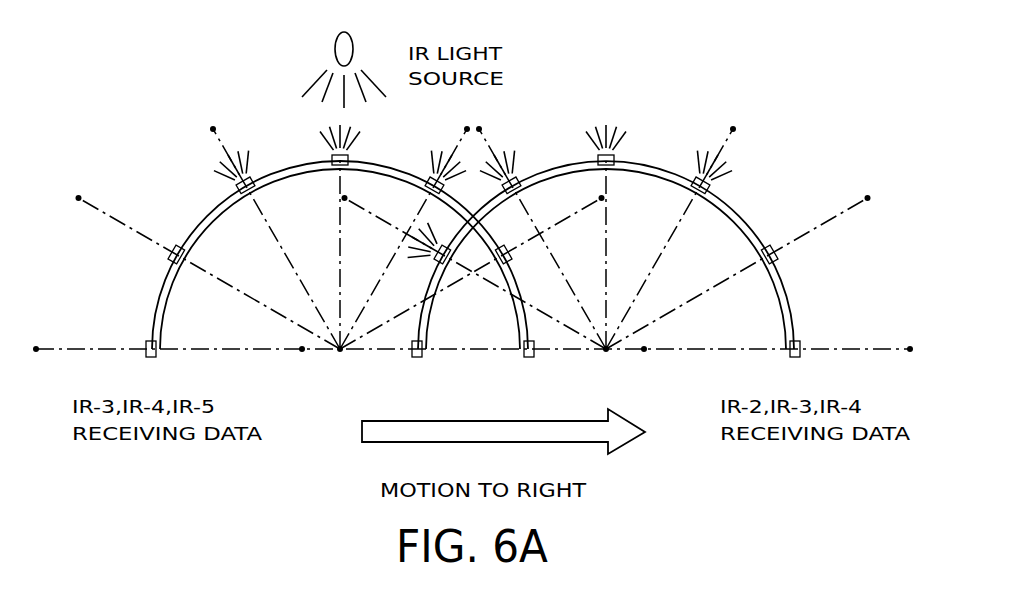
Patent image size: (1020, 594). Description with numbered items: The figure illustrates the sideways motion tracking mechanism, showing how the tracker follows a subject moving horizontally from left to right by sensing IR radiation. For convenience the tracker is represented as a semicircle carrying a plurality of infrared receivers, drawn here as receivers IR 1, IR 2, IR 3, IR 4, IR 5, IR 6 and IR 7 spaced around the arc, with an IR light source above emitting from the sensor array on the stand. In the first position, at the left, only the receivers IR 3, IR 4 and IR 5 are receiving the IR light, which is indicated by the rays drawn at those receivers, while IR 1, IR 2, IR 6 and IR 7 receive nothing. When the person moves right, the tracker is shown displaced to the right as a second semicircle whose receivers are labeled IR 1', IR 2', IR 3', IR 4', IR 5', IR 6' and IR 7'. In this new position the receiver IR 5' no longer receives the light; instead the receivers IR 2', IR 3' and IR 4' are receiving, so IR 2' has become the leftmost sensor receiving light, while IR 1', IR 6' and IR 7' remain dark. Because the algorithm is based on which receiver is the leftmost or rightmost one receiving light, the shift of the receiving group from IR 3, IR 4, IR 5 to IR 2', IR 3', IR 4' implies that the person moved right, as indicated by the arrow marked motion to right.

The infrared receiver IR 1 is at (138, 362).
The infrared receiver IR 2 is at (154, 264).
The infrared receiver IR 3 is at (221, 172).
The infrared receiver IR 4 is at (316, 145).
The infrared receiver IR 5 is at (427, 172).
The infrared receiver IR 6 is at (525, 265).
The infrared receiver IR 7 is at (551, 362).
The infrared receiver IR 1' is at (404, 362).
The infrared receiver IR 2' is at (421, 253).
The infrared receiver IR 3' is at (522, 172).
The infrared receiver IR 4' is at (627, 145).
The infrared receiver IR 5' is at (725, 173).
The infrared receiver IR 6' is at (794, 265).
The infrared receiver IR 7' is at (820, 362).